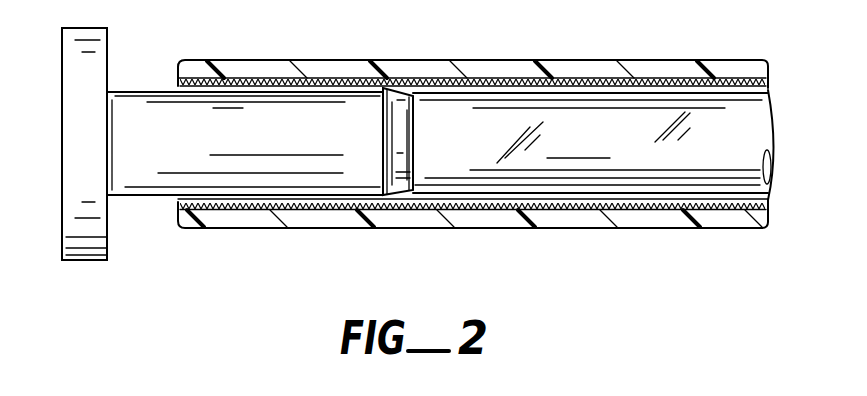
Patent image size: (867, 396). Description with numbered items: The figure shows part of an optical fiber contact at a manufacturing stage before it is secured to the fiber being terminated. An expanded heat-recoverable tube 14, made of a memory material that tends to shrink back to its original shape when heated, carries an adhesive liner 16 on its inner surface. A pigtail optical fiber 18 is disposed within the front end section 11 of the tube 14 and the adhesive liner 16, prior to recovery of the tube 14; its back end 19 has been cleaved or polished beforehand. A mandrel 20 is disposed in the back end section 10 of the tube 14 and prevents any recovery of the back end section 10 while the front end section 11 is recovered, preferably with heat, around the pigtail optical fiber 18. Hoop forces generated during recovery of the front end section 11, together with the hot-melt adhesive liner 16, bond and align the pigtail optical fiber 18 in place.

The back end section 10 is at (223, 60).
The front end section 11 is at (652, 60).
The heat-recoverable tube 14 is at (368, 60).
The adhesive liner 16 is at (510, 78).
The pigtail optical fiber 18 is at (596, 142).
The back end of the pigtail optical fiber 19 is at (397, 153).
The mandrel 20 is at (308, 153).